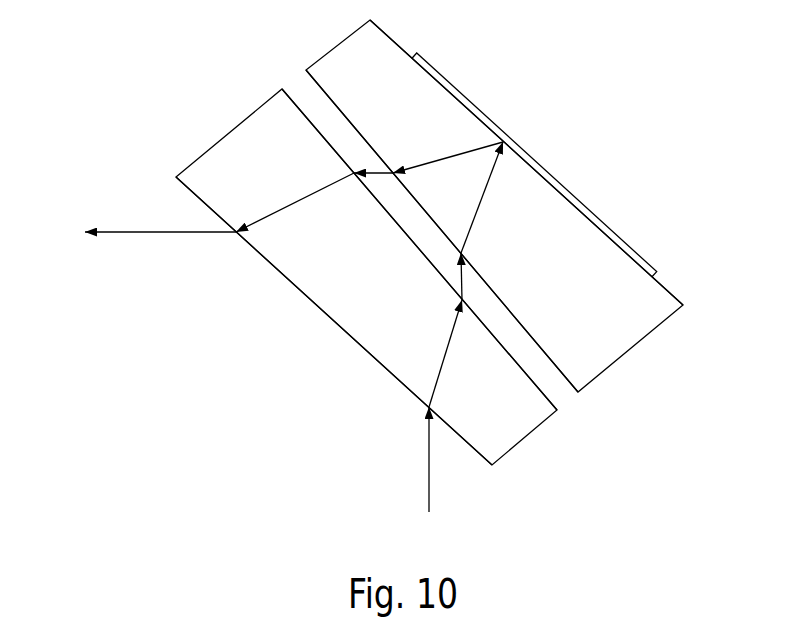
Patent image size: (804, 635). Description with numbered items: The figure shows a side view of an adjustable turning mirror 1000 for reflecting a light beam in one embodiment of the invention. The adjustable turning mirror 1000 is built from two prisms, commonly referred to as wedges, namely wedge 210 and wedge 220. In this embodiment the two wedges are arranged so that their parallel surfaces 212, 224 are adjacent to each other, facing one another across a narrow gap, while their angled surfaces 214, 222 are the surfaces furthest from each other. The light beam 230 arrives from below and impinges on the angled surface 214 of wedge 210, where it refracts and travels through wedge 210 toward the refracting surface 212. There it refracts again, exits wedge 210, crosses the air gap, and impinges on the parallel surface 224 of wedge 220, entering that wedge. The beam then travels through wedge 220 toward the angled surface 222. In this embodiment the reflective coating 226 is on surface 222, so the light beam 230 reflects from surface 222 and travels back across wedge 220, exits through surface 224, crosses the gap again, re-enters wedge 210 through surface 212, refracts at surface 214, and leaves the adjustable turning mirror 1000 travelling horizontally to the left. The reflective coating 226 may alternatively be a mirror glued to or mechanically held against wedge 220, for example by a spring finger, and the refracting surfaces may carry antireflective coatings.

The adjustable turning mirror 1000 is at (141, 85).
The wedge 210 is at (391, 295).
The refracting surface 212 is at (468, 312).
The refracting surface 214 is at (442, 418).
The wedge 220 is at (616, 333).
The surface 222 is at (522, 160).
The surface 224 is at (476, 268).
The reflective coating 226 is at (625, 238).
The light beam 230 is at (429, 465).